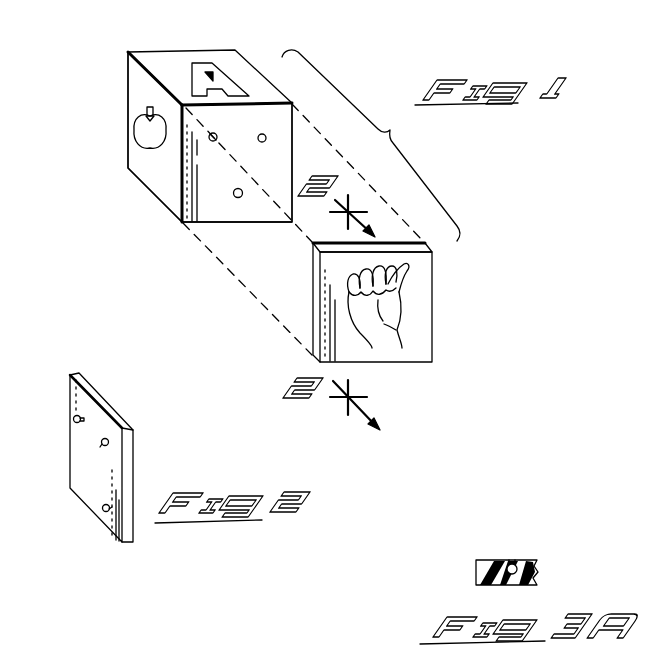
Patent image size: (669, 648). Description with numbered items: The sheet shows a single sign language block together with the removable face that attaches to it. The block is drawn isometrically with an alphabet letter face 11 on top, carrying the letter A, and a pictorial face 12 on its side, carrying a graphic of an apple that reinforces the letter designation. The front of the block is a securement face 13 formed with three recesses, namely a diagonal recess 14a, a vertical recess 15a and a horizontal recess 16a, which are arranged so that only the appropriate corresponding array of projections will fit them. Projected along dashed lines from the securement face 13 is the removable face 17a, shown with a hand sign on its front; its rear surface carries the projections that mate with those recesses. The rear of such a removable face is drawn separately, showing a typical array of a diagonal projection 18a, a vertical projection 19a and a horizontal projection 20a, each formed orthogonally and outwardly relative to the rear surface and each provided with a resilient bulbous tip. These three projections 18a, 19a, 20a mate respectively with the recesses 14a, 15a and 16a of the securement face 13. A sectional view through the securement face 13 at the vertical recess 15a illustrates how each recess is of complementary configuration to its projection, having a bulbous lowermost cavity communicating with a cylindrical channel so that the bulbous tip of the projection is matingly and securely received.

In FIG. 1, the alphabet letter face 11 is at (234, 58).
In FIG. 1, the pictorial face 12 is at (132, 84).
In FIG. 1, the securement face 13 is at (210, 208).
In FIG. 1, the diagonal recess 14a is at (211, 142).
In FIG. 1, the vertical recess 15a is at (274, 128).
In FIG. 3A, the vertical recess 15a is at (514, 561).
In FIG. 1, the horizontal recess 16a is at (240, 198).
In FIG. 1, the removable face 17a is at (427, 293).
In FIG. 2, the diagonal projection 18a is at (103, 437).
In FIG. 2, the vertical projection 19a is at (72, 422).
In FIG. 2, the horizontal projection 20a is at (105, 512).